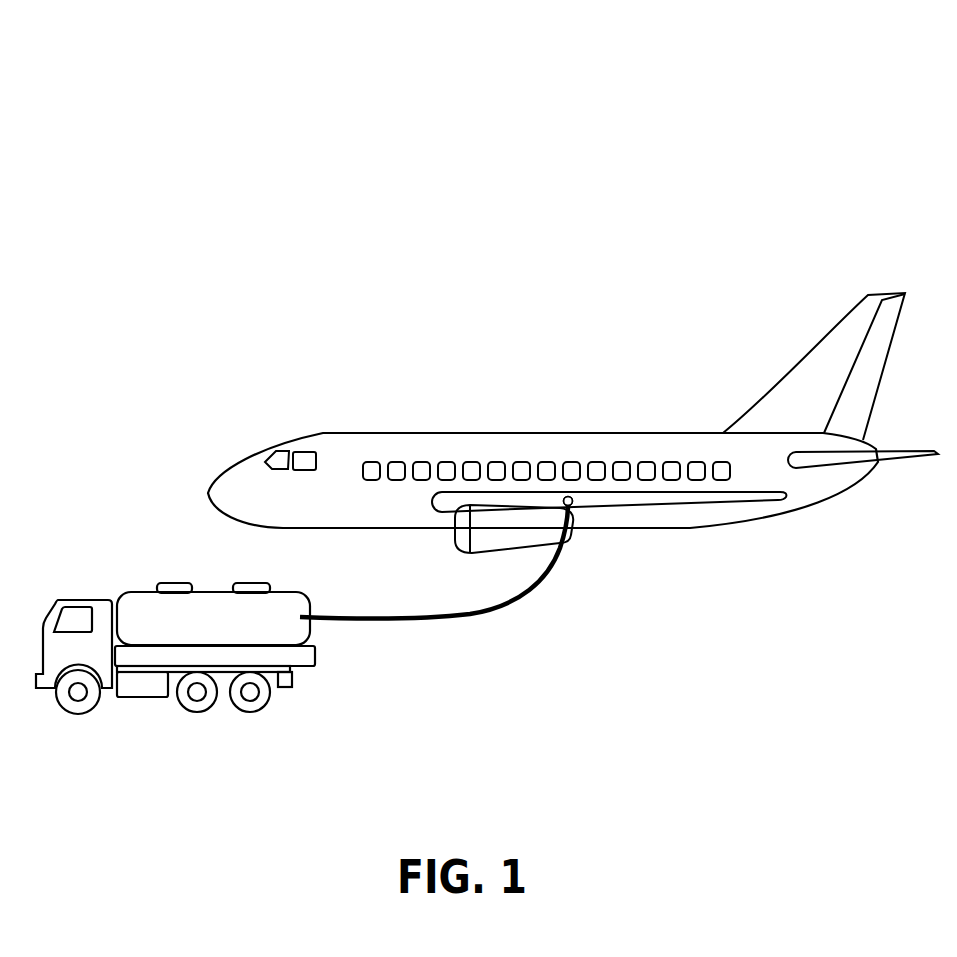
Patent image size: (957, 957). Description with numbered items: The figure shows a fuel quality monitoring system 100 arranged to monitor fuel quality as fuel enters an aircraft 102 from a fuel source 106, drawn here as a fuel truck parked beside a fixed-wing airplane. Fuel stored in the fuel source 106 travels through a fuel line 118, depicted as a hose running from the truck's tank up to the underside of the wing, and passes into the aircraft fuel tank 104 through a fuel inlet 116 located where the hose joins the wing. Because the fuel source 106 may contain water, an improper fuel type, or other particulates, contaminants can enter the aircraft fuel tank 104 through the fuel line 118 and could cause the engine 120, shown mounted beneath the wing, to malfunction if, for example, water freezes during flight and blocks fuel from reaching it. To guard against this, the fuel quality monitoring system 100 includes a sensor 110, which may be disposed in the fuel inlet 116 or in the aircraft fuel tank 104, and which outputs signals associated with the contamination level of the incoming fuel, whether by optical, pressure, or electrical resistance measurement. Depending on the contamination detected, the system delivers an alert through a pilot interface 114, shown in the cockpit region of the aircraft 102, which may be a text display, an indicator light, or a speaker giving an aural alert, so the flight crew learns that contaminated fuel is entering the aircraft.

The fuel quality monitoring system 100 is at (725, 108).
The aircraft 102 is at (590, 364).
The aircraft fuel tank 104 is at (512, 498).
The fuel source 106 is at (313, 652).
The sensor 110 is at (580, 498).
The pilot interface 114 is at (308, 462).
The fuel inlet 116 is at (580, 507).
The fuel line 118 is at (490, 615).
The engine 120 is at (487, 527).